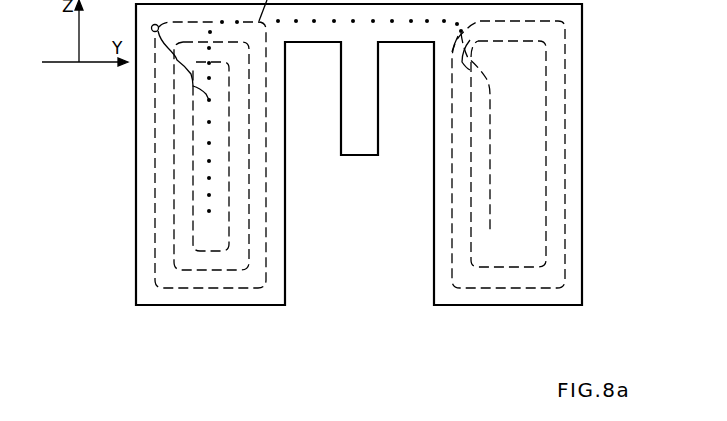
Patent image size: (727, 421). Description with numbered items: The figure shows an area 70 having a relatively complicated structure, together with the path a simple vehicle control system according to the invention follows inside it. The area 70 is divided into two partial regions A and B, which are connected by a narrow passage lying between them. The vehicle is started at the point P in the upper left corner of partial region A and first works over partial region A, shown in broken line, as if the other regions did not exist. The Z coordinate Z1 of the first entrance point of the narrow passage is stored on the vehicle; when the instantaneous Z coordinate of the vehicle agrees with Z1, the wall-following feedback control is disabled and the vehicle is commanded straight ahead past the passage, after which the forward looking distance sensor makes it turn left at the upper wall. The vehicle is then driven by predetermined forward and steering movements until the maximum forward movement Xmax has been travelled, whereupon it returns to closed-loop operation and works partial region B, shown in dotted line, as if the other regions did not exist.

The area 70 is at (510, 297).
The starting point P is at (149, 22).
The maximum forward movement Xmax is at (479, 117).
The Z coordinate of first entrance point Z1 is at (270, 42).
The partial region A is at (310, 161).
The partial region B is at (513, 162).